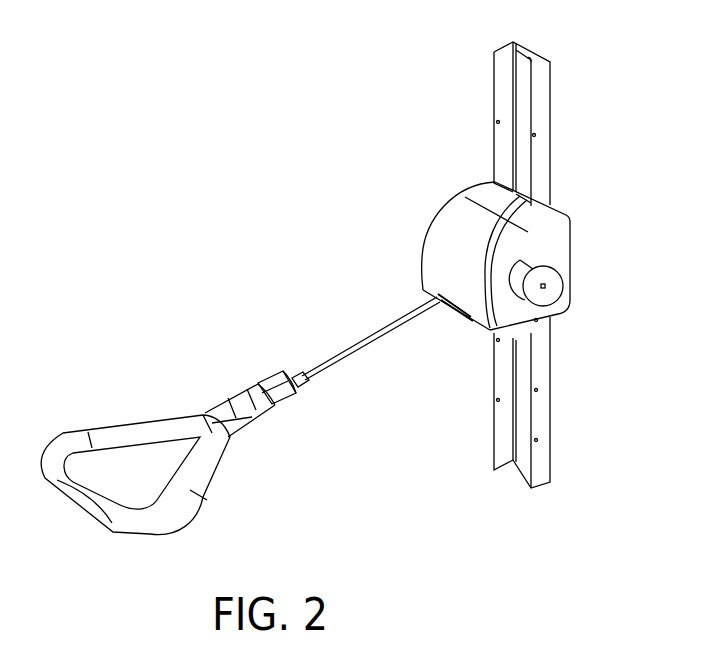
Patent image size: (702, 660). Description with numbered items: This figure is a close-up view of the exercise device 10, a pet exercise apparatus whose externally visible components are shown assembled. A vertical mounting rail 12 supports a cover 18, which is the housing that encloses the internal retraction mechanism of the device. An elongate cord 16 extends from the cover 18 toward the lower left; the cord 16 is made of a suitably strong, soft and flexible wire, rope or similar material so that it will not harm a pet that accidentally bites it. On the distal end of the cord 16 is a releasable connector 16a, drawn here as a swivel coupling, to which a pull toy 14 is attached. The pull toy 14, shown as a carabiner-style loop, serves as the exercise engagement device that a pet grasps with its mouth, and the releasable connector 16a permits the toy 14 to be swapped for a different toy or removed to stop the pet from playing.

The exercise device 10 is at (345, 172).
The mounting rail 12 is at (548, 121).
The pull toy 14 is at (110, 432).
The elongate cord 16 is at (374, 342).
The releasable connector 16a is at (257, 384).
The cover 18 is at (434, 249).